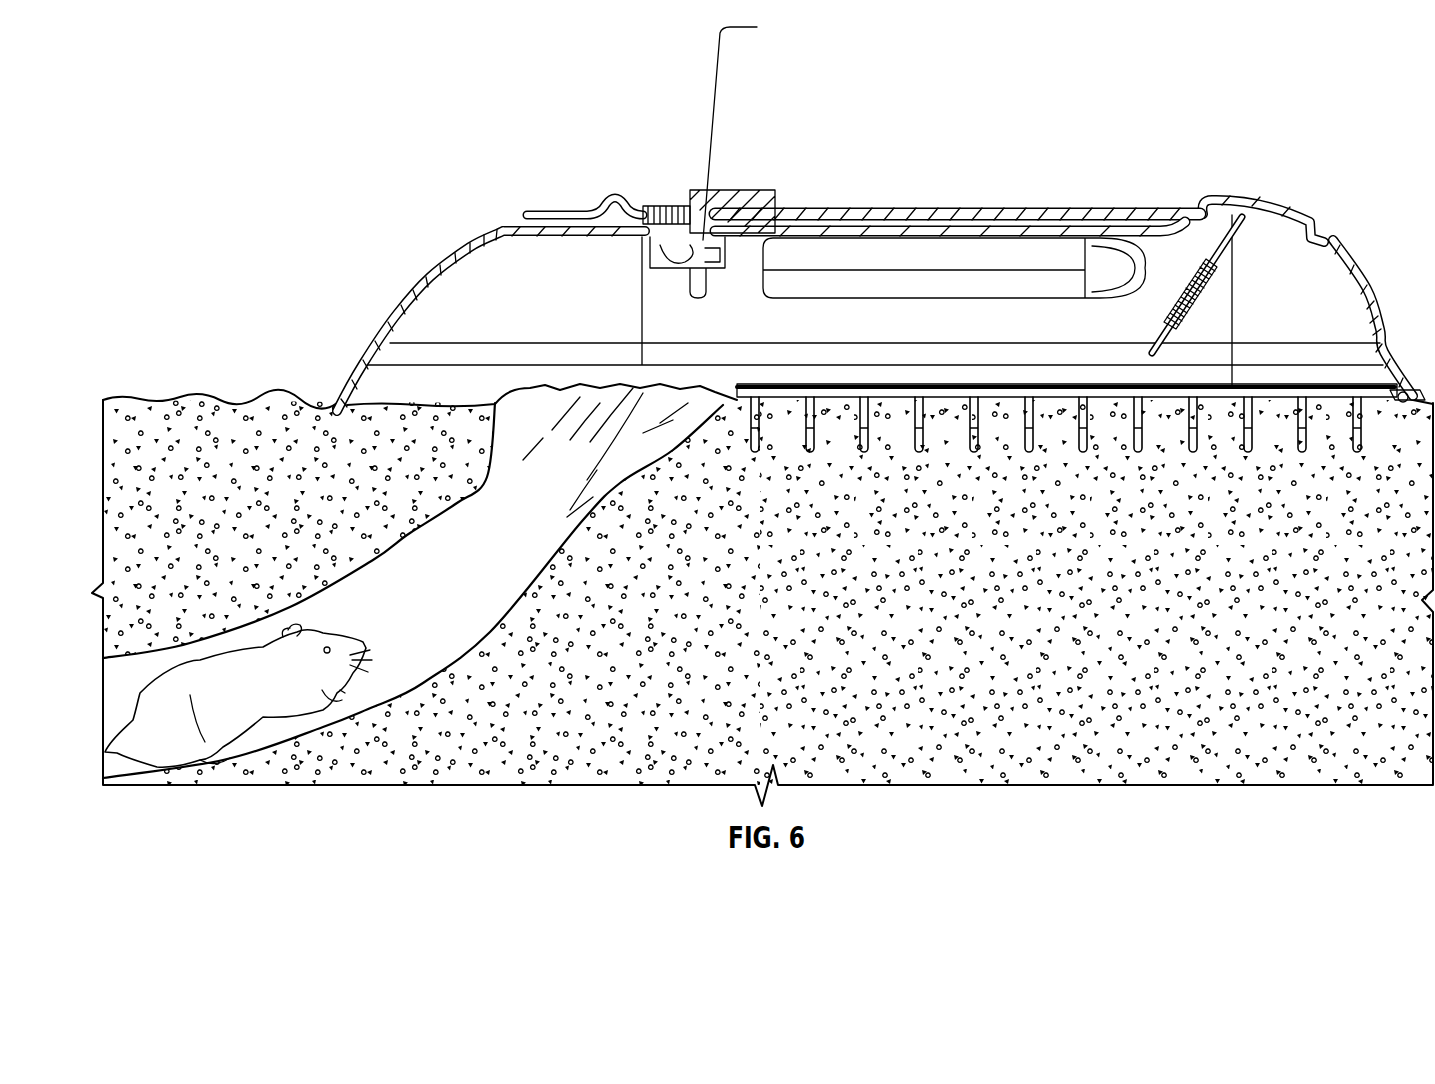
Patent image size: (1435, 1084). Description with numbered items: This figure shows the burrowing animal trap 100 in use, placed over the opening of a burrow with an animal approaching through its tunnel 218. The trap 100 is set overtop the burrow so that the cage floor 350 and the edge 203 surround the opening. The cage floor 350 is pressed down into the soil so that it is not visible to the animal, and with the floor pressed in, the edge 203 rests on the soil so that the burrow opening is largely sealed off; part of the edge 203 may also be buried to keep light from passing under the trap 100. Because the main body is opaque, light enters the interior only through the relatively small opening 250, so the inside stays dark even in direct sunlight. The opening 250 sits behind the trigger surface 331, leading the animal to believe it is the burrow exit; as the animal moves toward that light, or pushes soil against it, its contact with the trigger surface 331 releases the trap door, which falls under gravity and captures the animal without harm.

The trap 100 is at (250, 125).
The burrow tunnel with rodent 218 is at (250, 668).
The edge 203 is at (357, 393).
The opening 250 is at (1321, 226).
The trigger surface 331 is at (1207, 297).
The cage floor 350 is at (1196, 455).